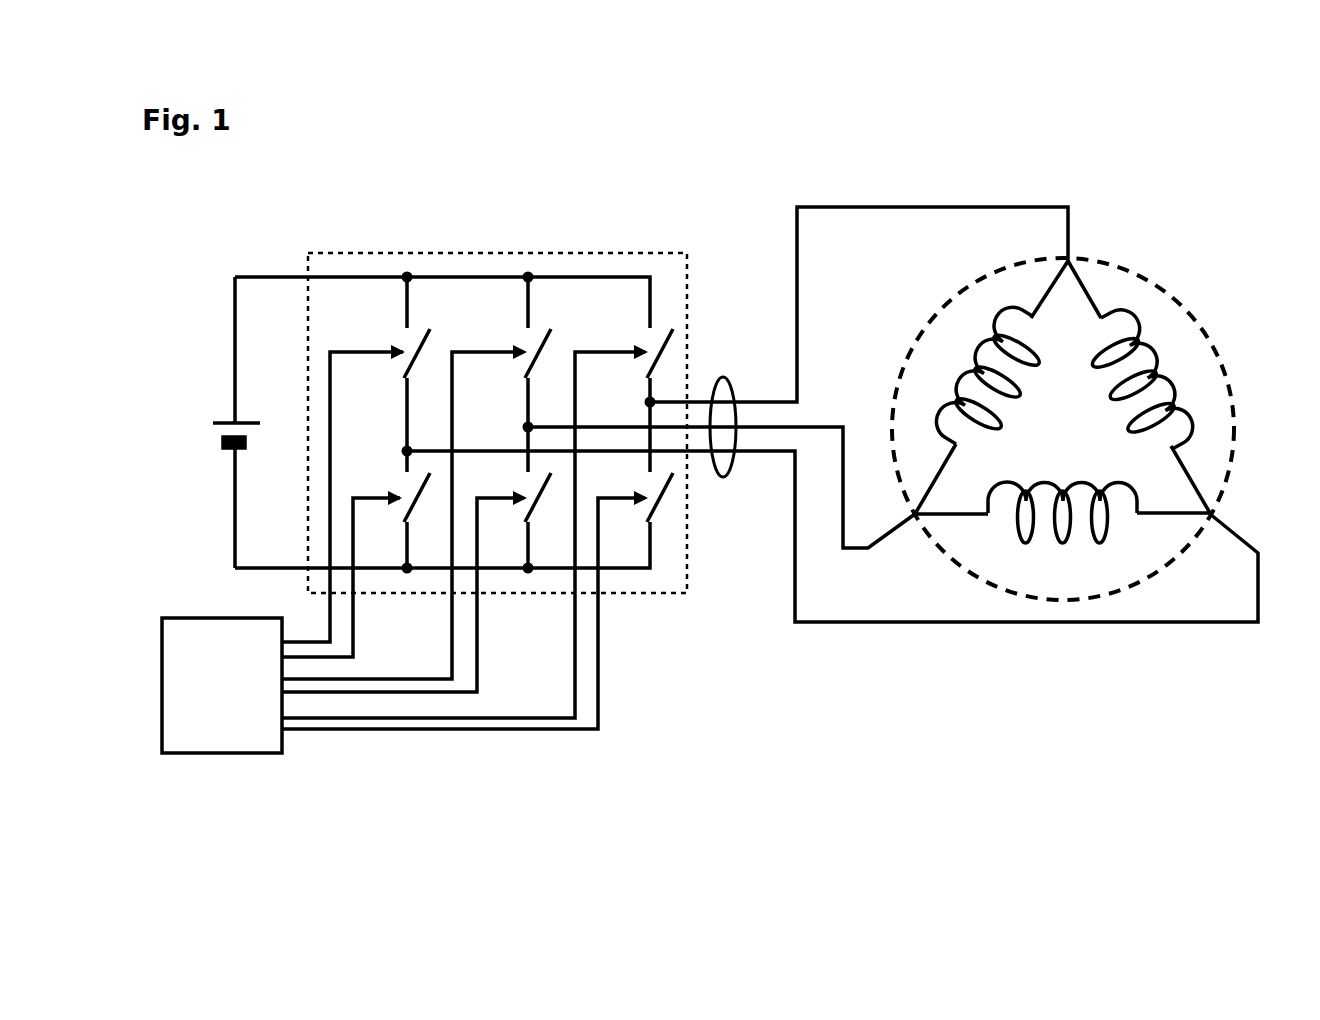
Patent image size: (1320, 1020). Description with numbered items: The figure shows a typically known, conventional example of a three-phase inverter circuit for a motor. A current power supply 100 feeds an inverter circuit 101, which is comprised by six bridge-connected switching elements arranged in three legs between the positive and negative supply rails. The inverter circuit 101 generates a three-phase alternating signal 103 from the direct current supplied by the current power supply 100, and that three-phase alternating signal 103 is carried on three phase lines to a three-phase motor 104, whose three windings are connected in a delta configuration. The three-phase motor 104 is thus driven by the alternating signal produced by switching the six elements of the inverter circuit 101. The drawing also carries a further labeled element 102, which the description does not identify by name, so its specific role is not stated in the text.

The current power supply 100 is at (212, 402).
The inverter circuit 101 is at (212, 606).
The inverter switching circuit 102 is at (455, 245).
The three-phase alternating signal 103 is at (722, 362).
The three-phase motor 104 is at (1183, 292).